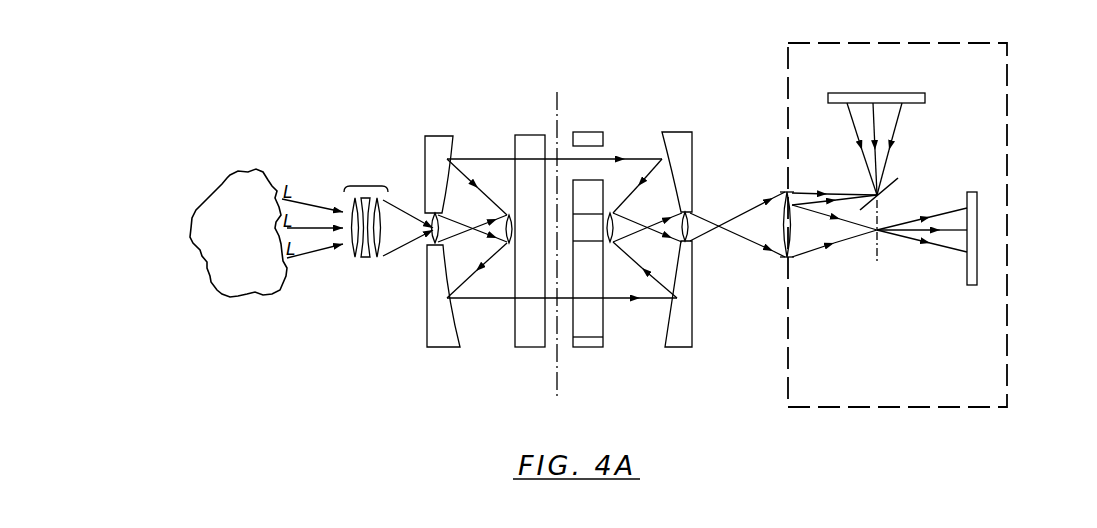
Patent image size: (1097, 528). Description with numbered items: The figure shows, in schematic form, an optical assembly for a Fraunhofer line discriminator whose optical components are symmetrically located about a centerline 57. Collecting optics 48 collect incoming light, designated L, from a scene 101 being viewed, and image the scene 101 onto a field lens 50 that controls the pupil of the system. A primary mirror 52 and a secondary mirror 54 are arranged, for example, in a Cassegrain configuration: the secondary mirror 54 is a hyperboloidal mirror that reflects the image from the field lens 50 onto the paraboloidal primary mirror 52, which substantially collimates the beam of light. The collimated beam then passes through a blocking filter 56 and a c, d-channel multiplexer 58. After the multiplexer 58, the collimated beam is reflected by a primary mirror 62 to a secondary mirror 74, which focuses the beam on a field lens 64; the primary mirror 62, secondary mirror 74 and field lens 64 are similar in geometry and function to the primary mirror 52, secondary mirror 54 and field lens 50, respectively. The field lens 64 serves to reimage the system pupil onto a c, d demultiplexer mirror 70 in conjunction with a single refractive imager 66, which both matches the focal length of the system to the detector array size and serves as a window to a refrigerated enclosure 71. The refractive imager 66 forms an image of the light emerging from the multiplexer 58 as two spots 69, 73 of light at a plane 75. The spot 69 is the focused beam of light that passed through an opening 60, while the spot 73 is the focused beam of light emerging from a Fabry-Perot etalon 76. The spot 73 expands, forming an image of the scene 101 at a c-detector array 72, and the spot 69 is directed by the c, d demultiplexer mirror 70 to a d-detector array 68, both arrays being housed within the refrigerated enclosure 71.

The scene 101 is at (269, 150).
The collecting optics 48 is at (388, 207).
The field lens 50 is at (430, 210).
The primary mirror 52 is at (440, 134).
The secondary mirror 54 is at (506, 211).
The blocking filter 56 is at (535, 134).
The centerline 57 is at (559, 115).
The c, d-channel multiplexer 58 is at (613, 114).
The opening 60 is at (602, 150).
The primary mirror 62 is at (712, 112).
The field lens 64 is at (695, 211).
The single refractive imager 66 is at (781, 258).
The d-detector array 68 is at (860, 91).
The spot 69 is at (888, 197).
The c, d demultiplexer mirror 70 is at (894, 182).
The refrigerated enclosure 71 is at (876, 409).
The c-detector array 72 is at (966, 276).
The spot 73 is at (871, 239).
The secondary mirror 74 is at (612, 246).
The plane 75 is at (880, 252).
The Fabry-Perot etalon 76 is at (572, 324).